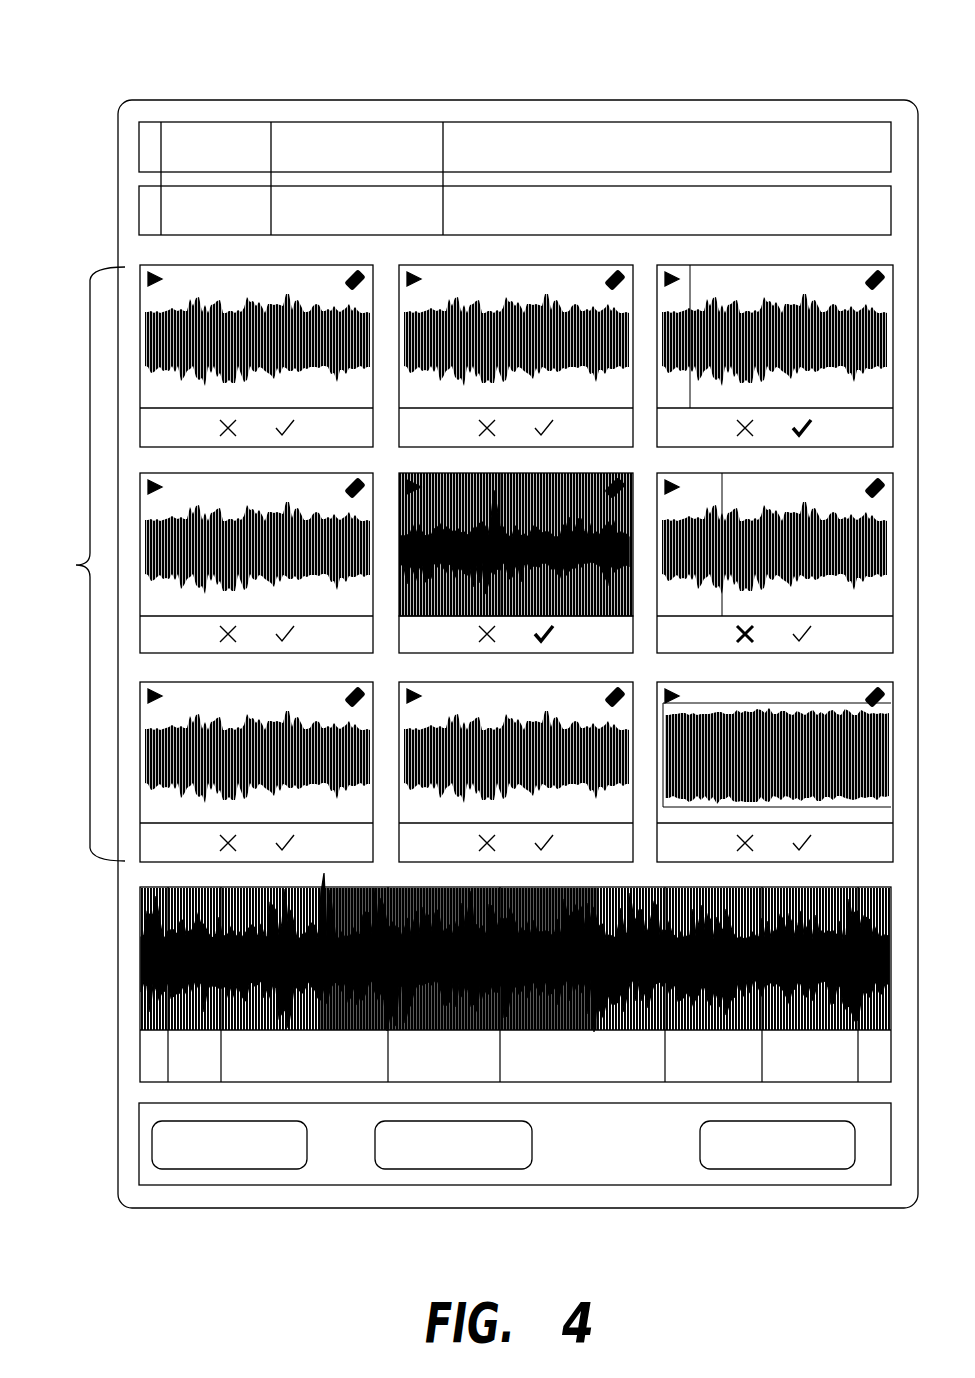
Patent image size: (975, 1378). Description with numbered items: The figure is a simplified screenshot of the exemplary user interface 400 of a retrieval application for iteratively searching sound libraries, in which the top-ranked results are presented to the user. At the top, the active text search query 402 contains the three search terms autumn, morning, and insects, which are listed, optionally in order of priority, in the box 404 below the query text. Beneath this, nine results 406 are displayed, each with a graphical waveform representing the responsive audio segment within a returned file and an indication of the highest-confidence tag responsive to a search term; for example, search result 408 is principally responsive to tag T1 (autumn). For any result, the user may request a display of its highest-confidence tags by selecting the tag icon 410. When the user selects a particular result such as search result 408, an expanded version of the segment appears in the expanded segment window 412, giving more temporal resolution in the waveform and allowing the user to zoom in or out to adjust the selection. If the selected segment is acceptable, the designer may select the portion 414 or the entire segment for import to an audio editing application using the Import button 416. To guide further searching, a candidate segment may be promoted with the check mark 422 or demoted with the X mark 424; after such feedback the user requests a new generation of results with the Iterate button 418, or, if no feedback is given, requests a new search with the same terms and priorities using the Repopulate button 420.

The user interface 400 is at (158, 46).
The active text search query 402 is at (139, 152).
The box 404 is at (139, 212).
The results 406 is at (450, 563).
The search result 408 is at (475, 564).
The tag icon 410 is at (612, 486).
The expanded segment window 412 is at (459, 977).
The portion 414 is at (318, 1022).
The Import button 416 is at (778, 1170).
The Iterate button 418 is at (152, 1148).
The Repopulate button 420 is at (452, 1170).
The check mark 422 is at (560, 640).
The X mark 424 is at (473, 632).